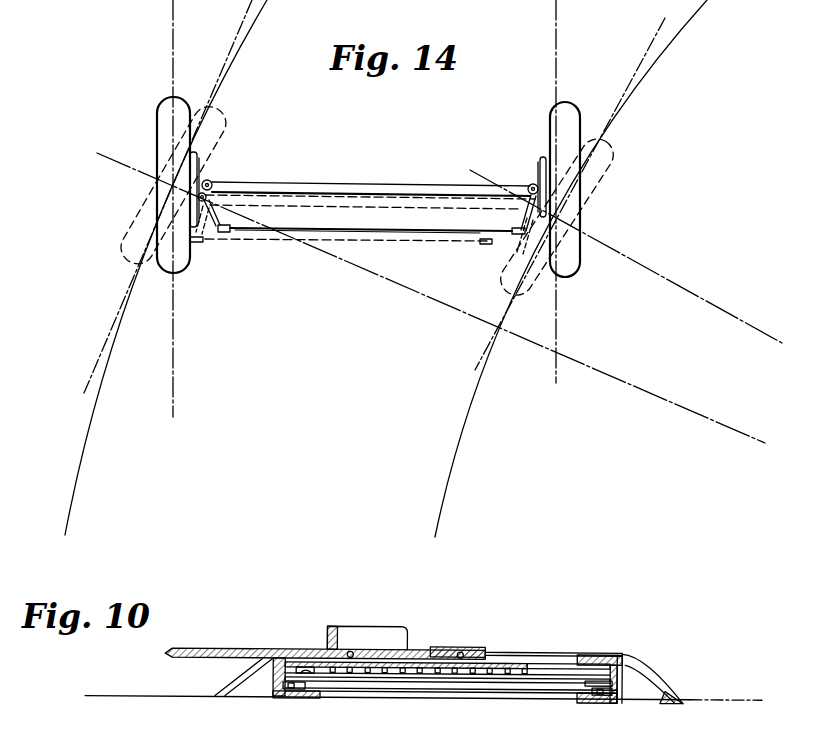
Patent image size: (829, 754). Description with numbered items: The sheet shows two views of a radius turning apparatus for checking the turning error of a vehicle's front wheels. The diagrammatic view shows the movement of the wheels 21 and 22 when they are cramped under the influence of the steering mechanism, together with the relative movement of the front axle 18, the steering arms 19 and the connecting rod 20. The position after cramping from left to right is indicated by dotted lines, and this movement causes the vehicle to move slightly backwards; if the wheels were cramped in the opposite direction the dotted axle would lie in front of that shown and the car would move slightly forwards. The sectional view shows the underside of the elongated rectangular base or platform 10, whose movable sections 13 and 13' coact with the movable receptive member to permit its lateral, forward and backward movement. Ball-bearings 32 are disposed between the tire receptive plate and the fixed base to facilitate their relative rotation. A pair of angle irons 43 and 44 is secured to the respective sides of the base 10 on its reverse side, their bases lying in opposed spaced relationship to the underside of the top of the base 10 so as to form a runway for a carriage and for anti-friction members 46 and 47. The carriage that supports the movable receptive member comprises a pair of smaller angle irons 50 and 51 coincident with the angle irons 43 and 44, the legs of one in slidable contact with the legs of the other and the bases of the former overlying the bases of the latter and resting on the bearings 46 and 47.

In FIG. 10, the base or platform 10 is at (671, 682).
In FIG. 10, the movable section 13 is at (394, 659).
In FIG. 10, the movable section 13' is at (630, 667).
In FIG. 14, the front axle 18 is at (330, 184).
In FIG. 14, the steering arms 19 is at (215, 212).
In FIG. 14, the connecting rod 20 is at (343, 233).
In FIG. 14, the wheel 21 is at (165, 119).
In FIG. 14, the wheel 22 is at (572, 127).
In FIG. 10, the ball-bearings 32 is at (350, 650).
In FIG. 10, the angle iron 43 is at (599, 702).
In FIG. 10, the angle iron 44 is at (296, 689).
In FIG. 10, the anti-friction member 46 is at (580, 700).
In FIG. 10, the anti-friction member 47 is at (275, 697).
In FIG. 10, the angle iron 50 is at (596, 678).
In FIG. 10, the angle iron 51 is at (312, 673).